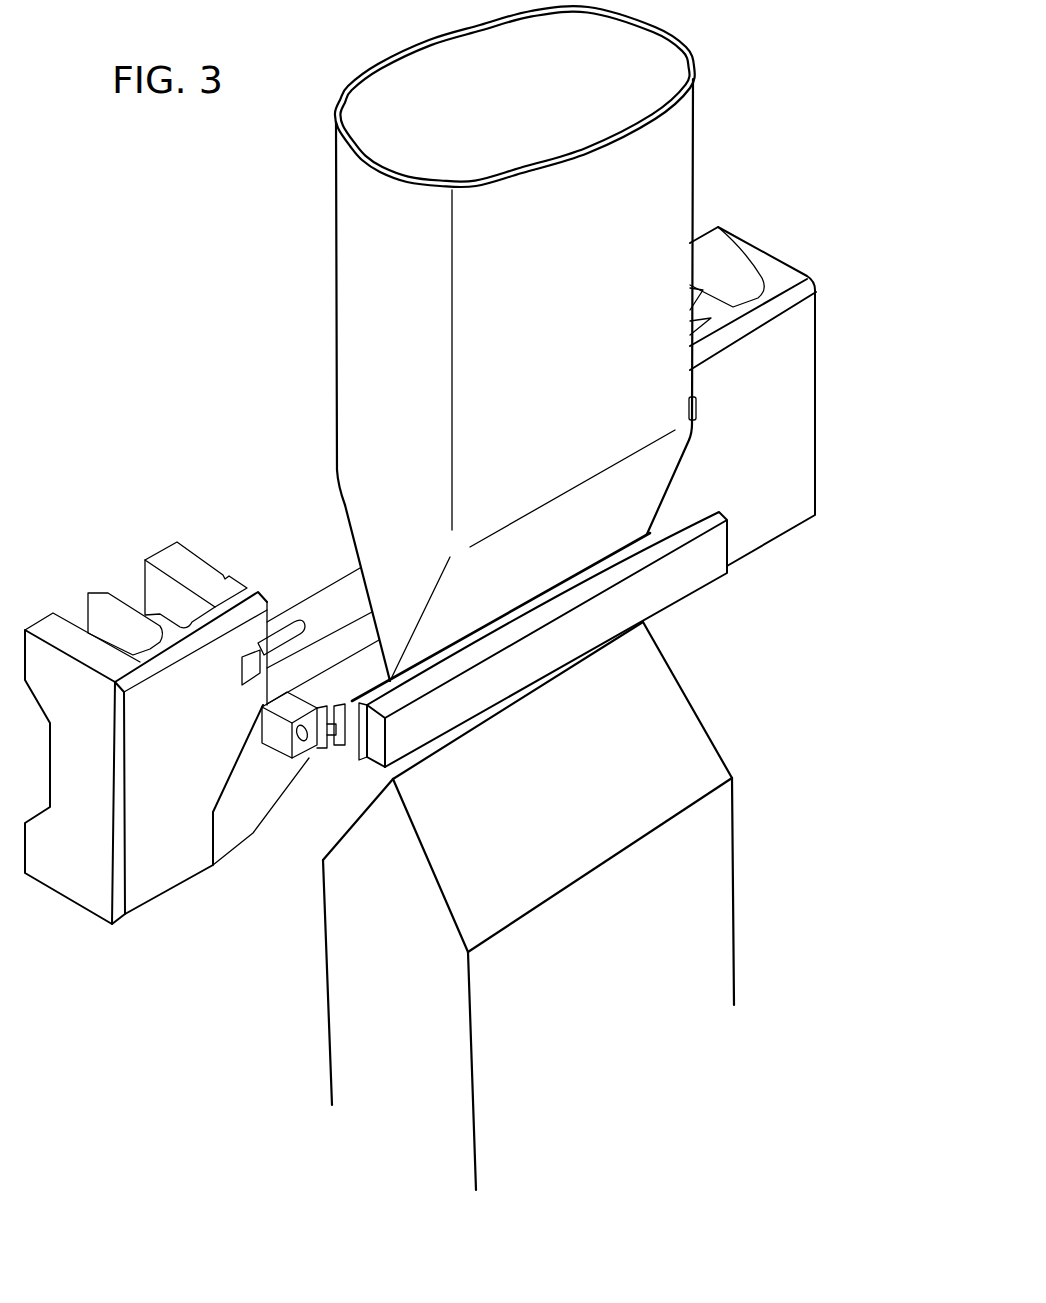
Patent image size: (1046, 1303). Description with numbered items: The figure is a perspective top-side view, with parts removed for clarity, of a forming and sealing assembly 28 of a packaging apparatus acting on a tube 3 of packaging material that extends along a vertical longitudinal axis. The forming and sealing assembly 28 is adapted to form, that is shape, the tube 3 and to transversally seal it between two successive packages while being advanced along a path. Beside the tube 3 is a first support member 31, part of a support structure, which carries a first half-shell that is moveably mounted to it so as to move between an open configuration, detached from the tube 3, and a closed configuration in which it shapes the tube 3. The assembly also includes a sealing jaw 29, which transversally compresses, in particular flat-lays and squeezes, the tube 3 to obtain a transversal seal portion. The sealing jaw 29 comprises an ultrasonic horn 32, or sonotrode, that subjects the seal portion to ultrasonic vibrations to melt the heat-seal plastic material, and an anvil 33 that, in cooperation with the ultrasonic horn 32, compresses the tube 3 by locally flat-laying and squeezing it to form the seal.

The tube 3 is at (683, 115).
The forming and sealing assembly 28 is at (843, 148).
The sealing jaw 29 is at (308, 820).
The first support member 31 is at (805, 320).
The ultrasonic horn 32 is at (645, 557).
The anvil 33 is at (358, 670).